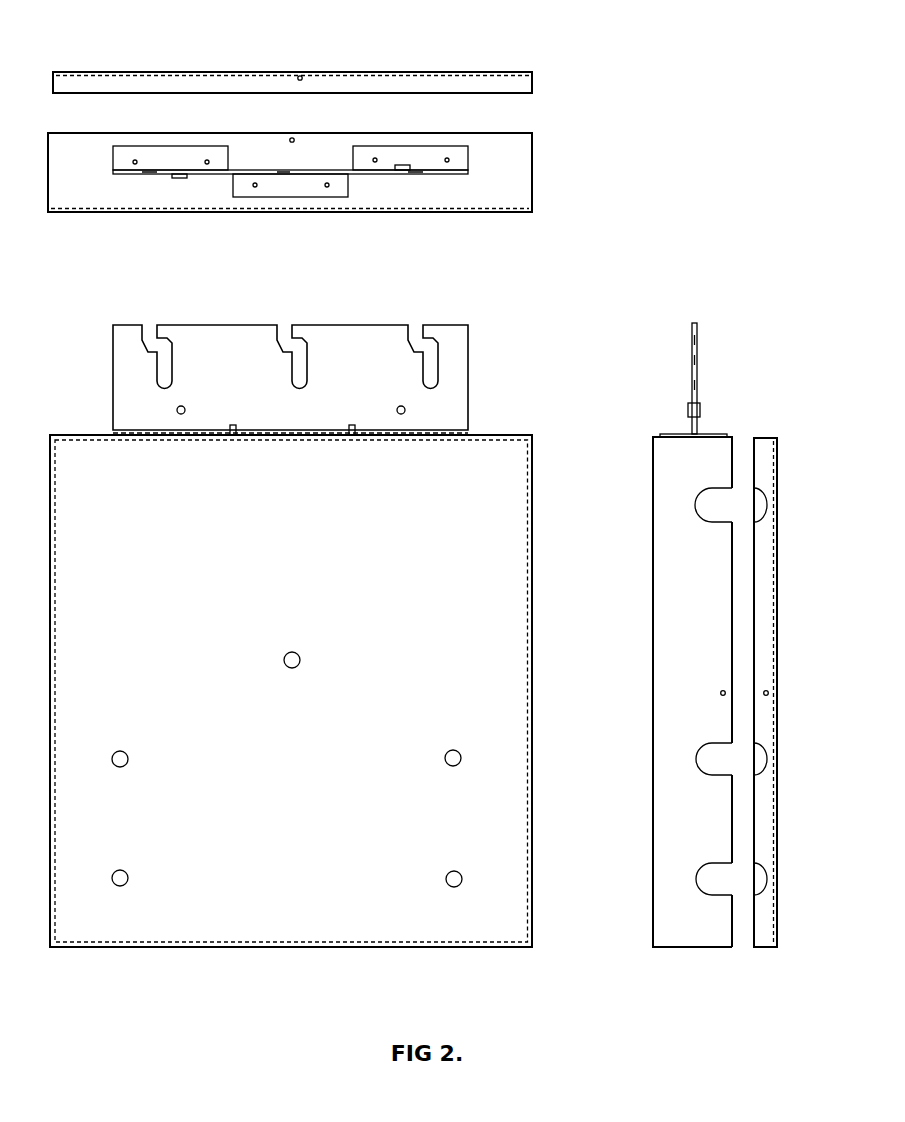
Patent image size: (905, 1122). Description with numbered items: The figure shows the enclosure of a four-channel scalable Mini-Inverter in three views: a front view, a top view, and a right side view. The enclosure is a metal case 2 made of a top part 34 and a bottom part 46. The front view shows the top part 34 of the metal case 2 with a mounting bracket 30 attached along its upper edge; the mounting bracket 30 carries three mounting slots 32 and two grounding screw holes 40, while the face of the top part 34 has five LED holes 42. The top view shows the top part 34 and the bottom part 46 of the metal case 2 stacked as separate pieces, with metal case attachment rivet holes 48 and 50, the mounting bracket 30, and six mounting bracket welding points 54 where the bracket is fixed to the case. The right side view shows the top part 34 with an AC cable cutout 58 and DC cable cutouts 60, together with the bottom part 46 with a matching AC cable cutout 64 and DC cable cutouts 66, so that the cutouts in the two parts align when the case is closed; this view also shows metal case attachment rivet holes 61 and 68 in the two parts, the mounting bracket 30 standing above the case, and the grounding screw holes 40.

The metal case 2 is at (553, 208).
The mounting bracket 30 is at (291, 183).
The mounting slots 32 is at (281, 327).
The top part of the metal case 34 is at (537, 163).
The grounding screw holes 40 is at (186, 407).
The LED holes 42 is at (299, 654).
The bottom part of the metal case 46 is at (470, 72).
The metal case attachment rivet hole 48 is at (302, 76).
The metal case attachment rivet hole 50 is at (294, 139).
The mounting bracket welding points 54 is at (448, 159).
The AC cable cutout 58 is at (715, 523).
The DC cable cutouts 60 is at (712, 775).
The metal case attachment rivet hole 61 is at (721, 691).
The AC cable cutout 64 is at (763, 515).
The DC cable cutouts 66 is at (763, 770).
The metal case attachment rivet hole 68 is at (768, 691).